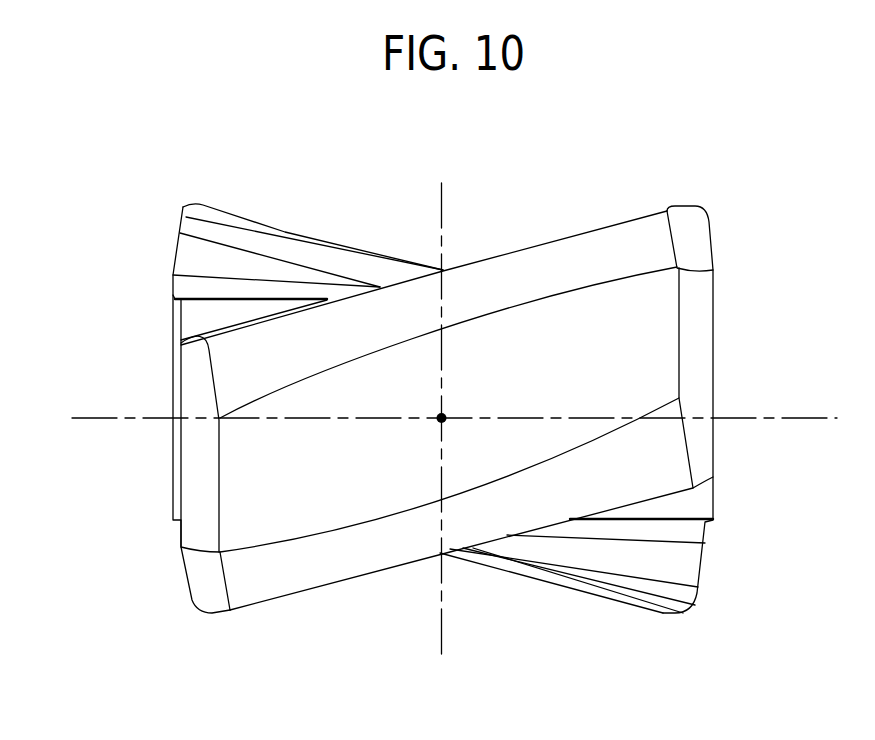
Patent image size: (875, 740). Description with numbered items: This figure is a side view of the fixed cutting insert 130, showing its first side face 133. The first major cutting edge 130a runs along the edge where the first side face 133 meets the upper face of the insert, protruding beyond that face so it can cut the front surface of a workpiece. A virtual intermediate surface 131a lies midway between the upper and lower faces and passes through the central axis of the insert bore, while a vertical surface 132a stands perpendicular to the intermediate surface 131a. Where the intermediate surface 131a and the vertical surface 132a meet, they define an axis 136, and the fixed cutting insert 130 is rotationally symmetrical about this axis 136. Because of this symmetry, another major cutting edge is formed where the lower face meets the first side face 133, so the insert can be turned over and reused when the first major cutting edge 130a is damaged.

The fixed cutting insert 130 is at (706, 144).
The first major cutting edge 130a is at (570, 235).
The first side face 133 is at (582, 342).
The virtual intermediate surface 131a is at (800, 417).
The vertical surface 132a is at (445, 640).
The axis 136 is at (441, 418).